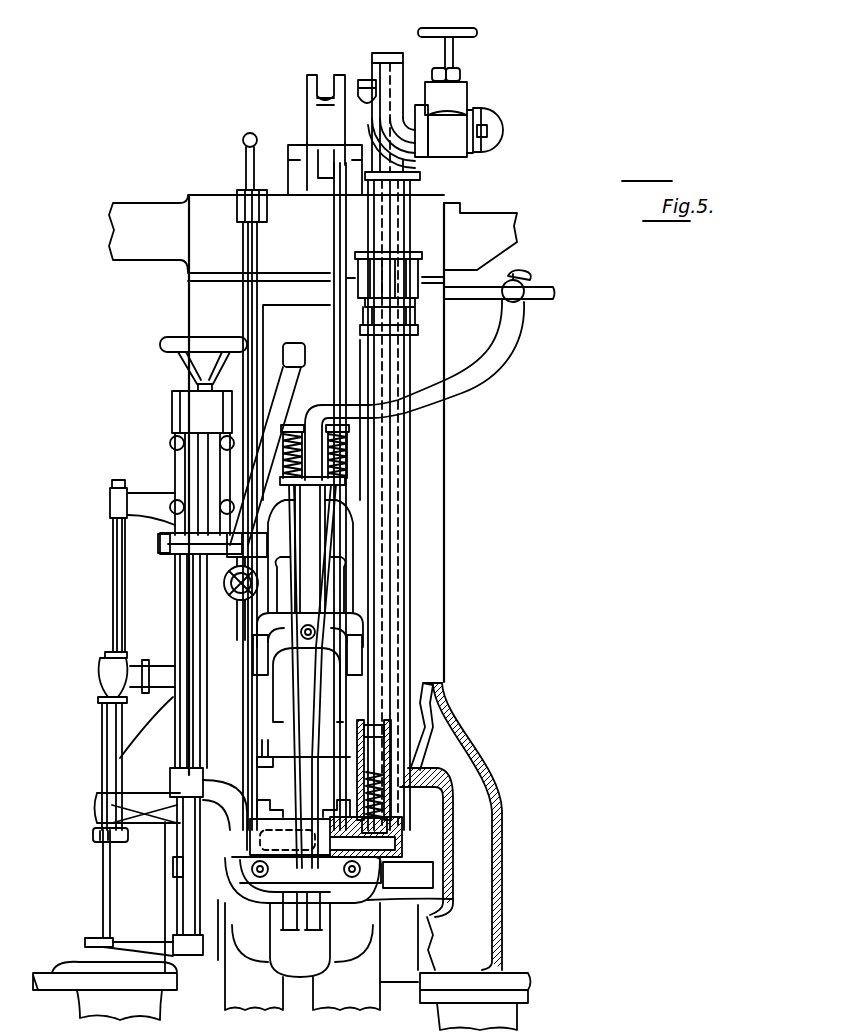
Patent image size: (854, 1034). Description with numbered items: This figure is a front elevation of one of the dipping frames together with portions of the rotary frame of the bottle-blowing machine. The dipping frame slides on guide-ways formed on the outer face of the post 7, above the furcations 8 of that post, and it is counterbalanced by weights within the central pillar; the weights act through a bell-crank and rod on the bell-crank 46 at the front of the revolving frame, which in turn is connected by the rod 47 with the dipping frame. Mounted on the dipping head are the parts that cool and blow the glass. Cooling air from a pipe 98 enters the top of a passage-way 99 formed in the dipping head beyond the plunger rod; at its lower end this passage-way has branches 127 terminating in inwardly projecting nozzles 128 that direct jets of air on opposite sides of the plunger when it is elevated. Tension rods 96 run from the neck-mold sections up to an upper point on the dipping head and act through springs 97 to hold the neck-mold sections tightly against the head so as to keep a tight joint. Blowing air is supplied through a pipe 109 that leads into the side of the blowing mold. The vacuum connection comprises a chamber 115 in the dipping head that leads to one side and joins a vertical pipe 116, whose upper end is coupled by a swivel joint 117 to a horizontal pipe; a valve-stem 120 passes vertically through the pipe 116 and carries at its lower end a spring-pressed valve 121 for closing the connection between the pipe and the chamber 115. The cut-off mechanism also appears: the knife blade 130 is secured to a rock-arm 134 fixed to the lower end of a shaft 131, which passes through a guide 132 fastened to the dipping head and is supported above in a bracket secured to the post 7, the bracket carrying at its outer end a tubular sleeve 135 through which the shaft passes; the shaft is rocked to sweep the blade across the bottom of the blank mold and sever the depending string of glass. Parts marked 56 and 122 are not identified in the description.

The post 7 is at (447, 440).
The furcations 8 is at (470, 738).
The bell-crank 46 is at (313, 101).
The rod 47 is at (342, 222).
The pedestal 56 is at (263, 905).
The tension rods 96 is at (333, 548).
The springs 97 is at (345, 461).
The pipe 98 is at (508, 355).
The passage-way 99 is at (330, 531).
The pipe 109 is at (245, 239).
The chamber 115 is at (400, 835).
The vertical pipe 116 is at (387, 583).
The swivel joint 117 is at (450, 122).
The valve-stem 120 is at (400, 73).
The spring-pressed valve 121 is at (405, 818).
The pipe 122 is at (389, 53).
The branches 127 is at (262, 640).
The nozzles 128 is at (268, 765).
The blade 130 is at (93, 938).
The shaft 131 is at (183, 900).
The guide 132 is at (105, 824).
The rock-arm 134 is at (130, 945).
The tubular sleeve 135 is at (181, 472).